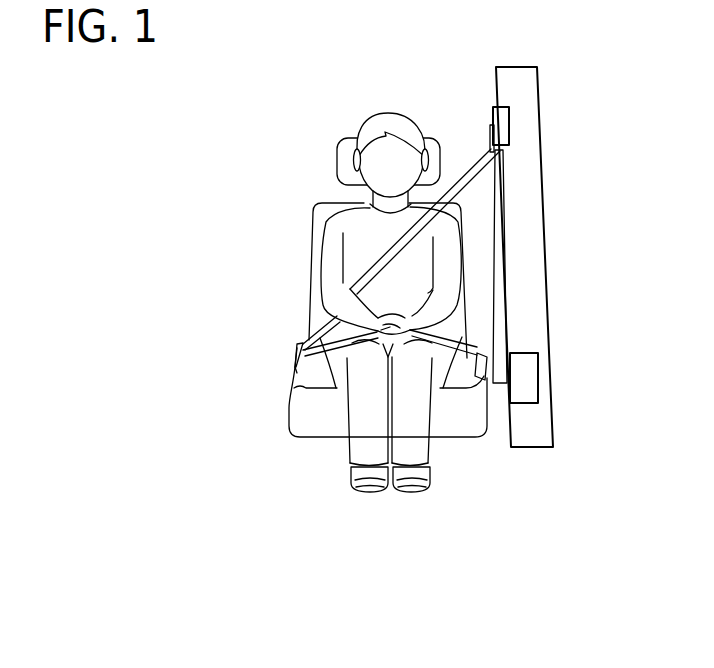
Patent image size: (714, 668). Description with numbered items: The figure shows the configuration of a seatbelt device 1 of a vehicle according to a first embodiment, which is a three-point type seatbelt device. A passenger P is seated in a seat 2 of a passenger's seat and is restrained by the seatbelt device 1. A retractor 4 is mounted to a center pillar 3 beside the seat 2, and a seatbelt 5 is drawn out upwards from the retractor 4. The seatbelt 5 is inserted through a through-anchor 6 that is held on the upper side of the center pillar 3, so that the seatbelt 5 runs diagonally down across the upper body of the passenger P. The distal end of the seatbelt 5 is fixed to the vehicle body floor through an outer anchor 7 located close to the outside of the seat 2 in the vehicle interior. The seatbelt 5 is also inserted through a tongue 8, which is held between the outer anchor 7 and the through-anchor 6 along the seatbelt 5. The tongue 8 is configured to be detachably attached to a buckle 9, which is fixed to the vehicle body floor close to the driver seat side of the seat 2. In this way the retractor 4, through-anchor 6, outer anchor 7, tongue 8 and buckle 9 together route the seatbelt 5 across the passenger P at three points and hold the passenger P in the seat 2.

The seatbelt device 1 is at (475, 90).
The seat 2 is at (322, 438).
The center pillar 3 is at (544, 213).
The retractor 4 is at (539, 364).
The seatbelt 5 is at (390, 265).
The through-anchor 6 is at (490, 131).
The outer anchor 7 is at (467, 366).
The tongue 8 is at (297, 345).
The buckle 9 is at (297, 372).
The passenger P is at (340, 212).